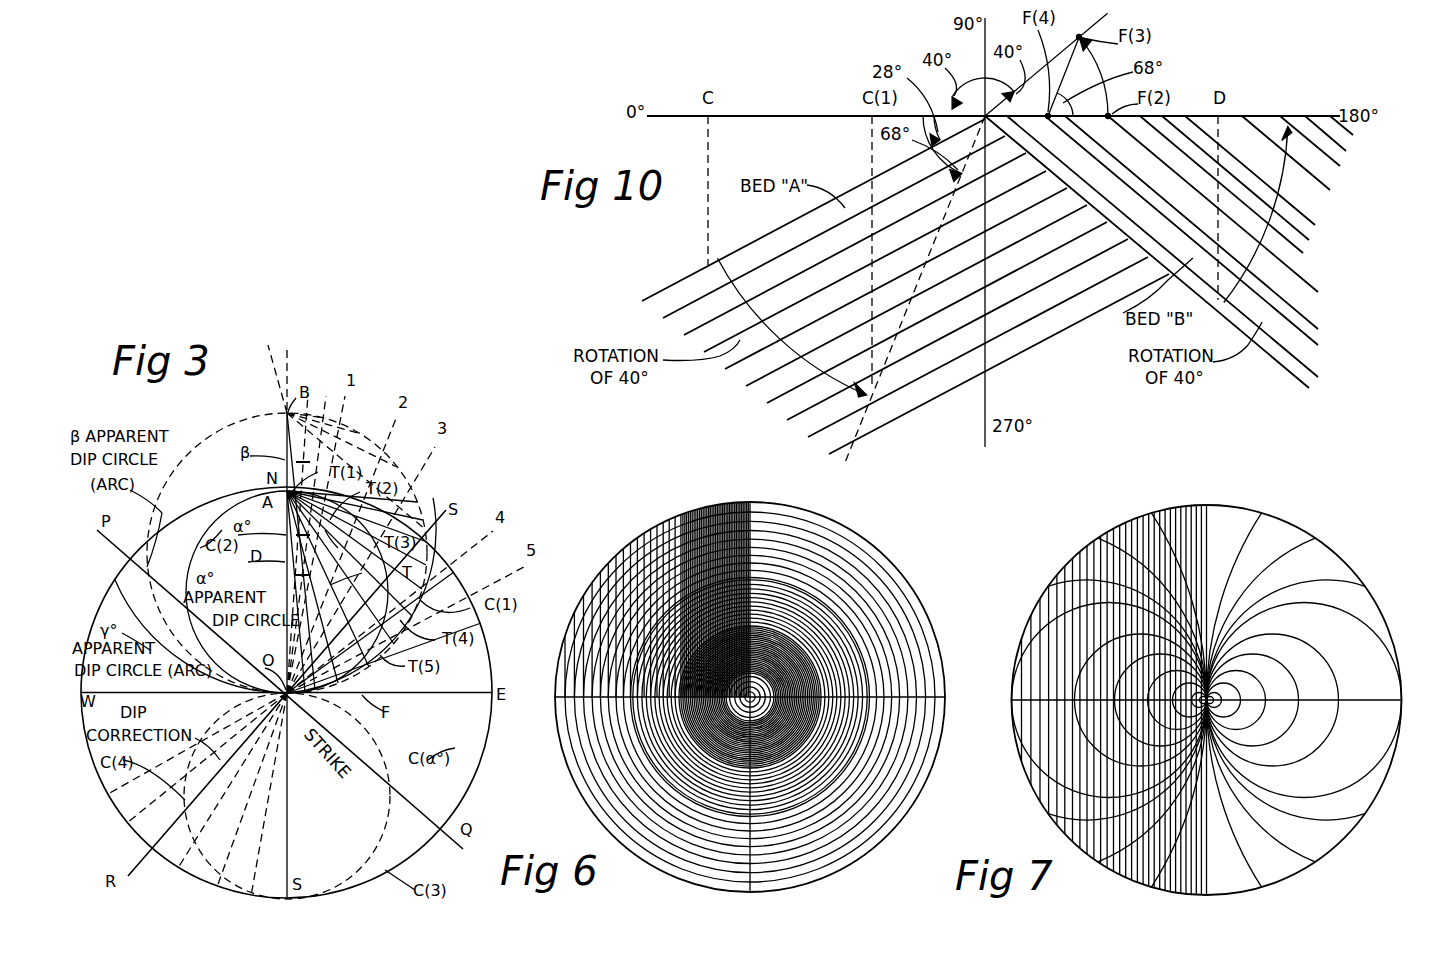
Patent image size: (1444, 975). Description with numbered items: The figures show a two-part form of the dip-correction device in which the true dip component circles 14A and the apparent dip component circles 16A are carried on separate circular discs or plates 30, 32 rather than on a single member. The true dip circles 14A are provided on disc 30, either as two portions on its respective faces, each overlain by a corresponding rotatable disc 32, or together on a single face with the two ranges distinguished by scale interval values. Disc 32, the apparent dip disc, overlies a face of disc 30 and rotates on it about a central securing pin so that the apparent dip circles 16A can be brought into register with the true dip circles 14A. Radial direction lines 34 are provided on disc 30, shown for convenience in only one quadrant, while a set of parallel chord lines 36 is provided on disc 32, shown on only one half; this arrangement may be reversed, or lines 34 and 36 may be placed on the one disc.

In FIG. 6, the circular disc 30 is at (900, 808).
In FIG. 6, the true dip component circles 14A is at (770, 827).
In FIG. 6, the radial direction lines 34 is at (560, 688).
In FIG. 7, the apparent dip disc 32 is at (1352, 806).
In FIG. 7, the apparent dip component circles 16A is at (1245, 832).
In FIG. 7, the parallel chord lines 36 is at (1195, 862).